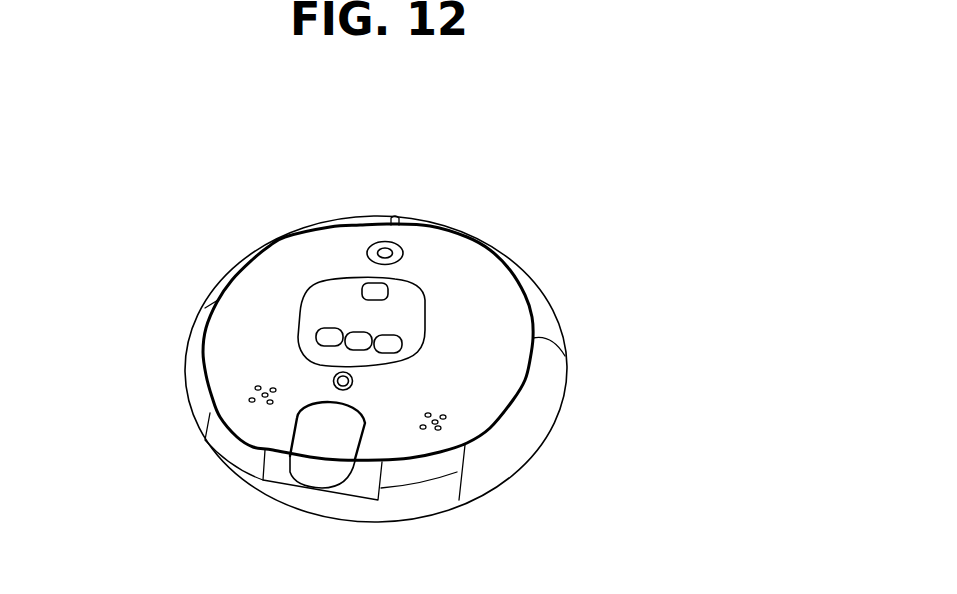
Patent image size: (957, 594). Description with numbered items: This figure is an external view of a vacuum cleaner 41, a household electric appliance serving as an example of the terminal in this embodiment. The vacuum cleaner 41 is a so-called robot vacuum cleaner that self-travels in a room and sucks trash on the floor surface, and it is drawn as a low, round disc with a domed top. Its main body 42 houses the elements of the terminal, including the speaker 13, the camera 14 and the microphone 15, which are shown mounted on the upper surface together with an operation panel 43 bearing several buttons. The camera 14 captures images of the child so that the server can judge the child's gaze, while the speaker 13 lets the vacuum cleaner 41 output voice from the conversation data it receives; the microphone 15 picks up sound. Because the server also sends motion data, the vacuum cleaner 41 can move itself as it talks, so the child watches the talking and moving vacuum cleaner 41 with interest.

The speaker 13 is at (456, 421).
The camera 14 is at (343, 380).
The microphone 15 is at (246, 388).
The vacuum cleaner 41 is at (368, 358).
The main body 42 is at (555, 327).
The operation panel 43 is at (417, 310).